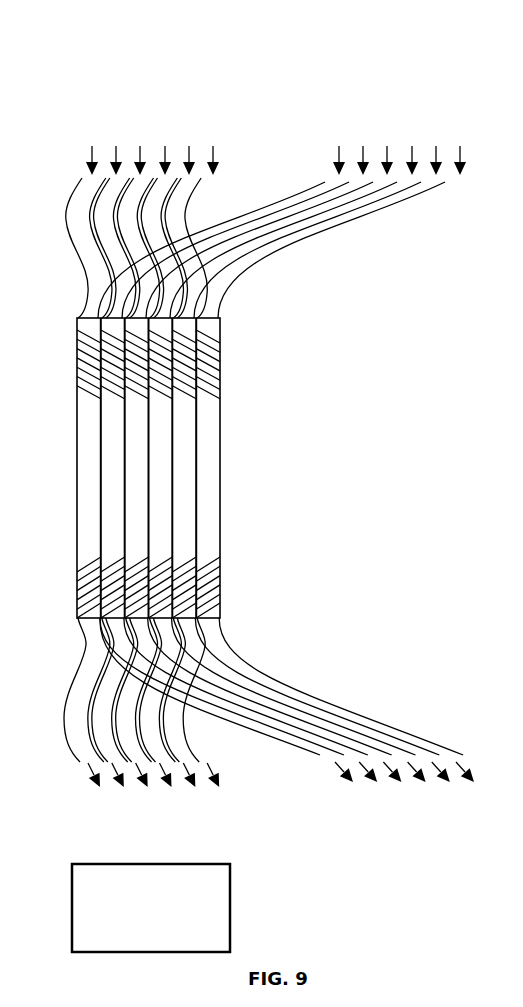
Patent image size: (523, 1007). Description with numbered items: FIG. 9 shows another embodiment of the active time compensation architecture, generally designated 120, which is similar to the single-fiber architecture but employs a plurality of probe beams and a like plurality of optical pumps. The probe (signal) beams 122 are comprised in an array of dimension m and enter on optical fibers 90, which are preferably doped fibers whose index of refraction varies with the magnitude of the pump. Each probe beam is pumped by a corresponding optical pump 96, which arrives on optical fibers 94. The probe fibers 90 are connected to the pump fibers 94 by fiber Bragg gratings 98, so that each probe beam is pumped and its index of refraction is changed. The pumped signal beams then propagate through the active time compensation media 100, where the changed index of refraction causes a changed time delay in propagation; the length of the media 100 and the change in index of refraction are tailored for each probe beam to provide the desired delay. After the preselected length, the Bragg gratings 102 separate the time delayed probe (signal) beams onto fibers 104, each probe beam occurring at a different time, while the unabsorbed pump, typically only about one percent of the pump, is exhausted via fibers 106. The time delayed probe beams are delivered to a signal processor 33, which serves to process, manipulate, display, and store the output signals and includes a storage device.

The active time compensation architecture 120 is at (271, 41).
The probe (signal) beams 122 is at (164, 122).
The optical pump 96 is at (400, 122).
The optical fiber 90 is at (68, 230).
The optical fiber 94 is at (268, 265).
The fiber Bragg grating 98 is at (210, 382).
The active time compensation media 100 is at (253, 453).
The Bragg grating 102 is at (212, 568).
The fiber carrying time delayed probe beams 104 is at (78, 678).
The fiber for unabsorbed pump 106 is at (325, 693).
The signal processor 33 is at (224, 912).